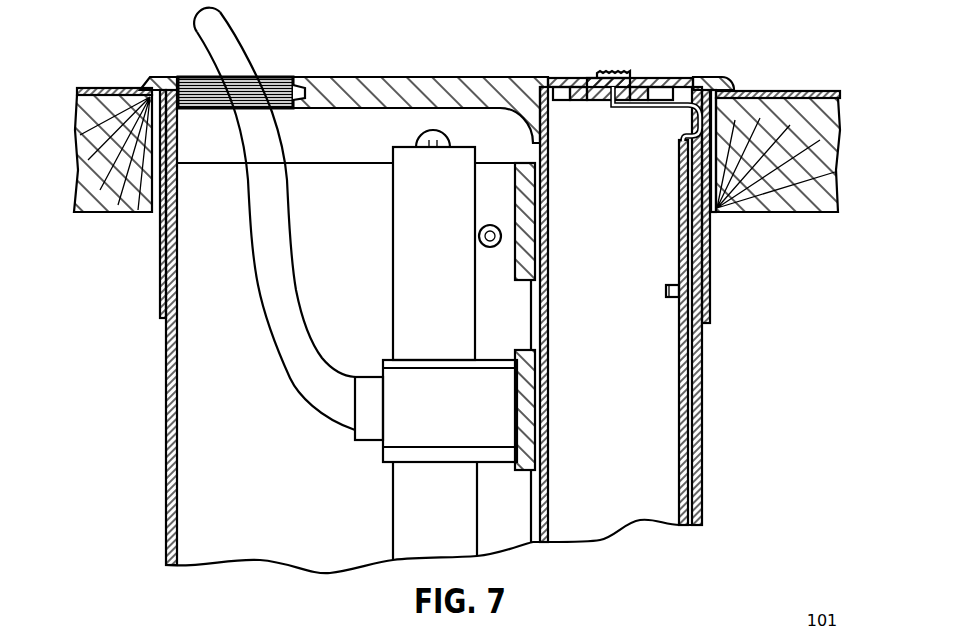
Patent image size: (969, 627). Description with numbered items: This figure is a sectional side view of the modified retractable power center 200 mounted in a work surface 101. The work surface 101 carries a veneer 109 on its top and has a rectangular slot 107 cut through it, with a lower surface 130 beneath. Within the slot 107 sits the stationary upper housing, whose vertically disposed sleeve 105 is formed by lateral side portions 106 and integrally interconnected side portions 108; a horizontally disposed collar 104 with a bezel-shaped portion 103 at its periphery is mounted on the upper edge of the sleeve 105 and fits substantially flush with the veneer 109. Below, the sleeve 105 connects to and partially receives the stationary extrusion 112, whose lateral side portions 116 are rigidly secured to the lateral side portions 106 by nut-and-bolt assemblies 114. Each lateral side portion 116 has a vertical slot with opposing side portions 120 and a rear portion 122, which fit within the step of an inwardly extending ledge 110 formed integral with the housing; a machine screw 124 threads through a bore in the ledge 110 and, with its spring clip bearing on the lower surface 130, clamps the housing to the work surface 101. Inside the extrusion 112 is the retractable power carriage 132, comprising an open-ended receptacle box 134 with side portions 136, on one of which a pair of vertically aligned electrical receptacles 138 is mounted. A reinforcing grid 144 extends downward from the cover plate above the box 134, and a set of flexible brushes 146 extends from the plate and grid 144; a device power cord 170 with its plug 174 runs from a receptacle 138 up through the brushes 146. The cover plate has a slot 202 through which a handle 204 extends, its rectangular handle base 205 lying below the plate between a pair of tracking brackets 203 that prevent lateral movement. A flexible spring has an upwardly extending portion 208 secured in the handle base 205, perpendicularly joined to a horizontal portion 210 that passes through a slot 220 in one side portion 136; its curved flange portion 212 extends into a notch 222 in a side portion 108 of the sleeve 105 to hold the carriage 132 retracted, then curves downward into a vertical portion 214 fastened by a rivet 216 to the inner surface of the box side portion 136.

The work surface 101 is at (97, 216).
The bezel-shaped portion 103 is at (148, 76).
The collar 104 is at (694, 78).
The sleeve 105 is at (157, 306).
The lateral side portion 106 is at (299, 141).
The slot 107 is at (158, 214).
The side portion 108 is at (711, 298).
The veneer 109 is at (113, 87).
The ledge 110 is at (478, 152).
The extrusion 112 is at (162, 414).
The nut-and-bolt assembly 114 is at (491, 222).
The lateral side portion 116 is at (236, 480).
The side portion 120 is at (392, 218).
The rear portion 122 is at (421, 513).
The machine screw 124 is at (435, 140).
The lower surface 130 is at (113, 218).
The power carriage 132 is at (650, 526).
The receptacle box 134 is at (664, 469).
The side portion 136 is at (677, 373).
The electrical receptacle 138 is at (516, 283).
The reinforcing grid 144 is at (381, 109).
The brushes 146 is at (284, 77).
The power cord 170 is at (289, 368).
The plug 174 is at (383, 462).
The power center 200 is at (724, 50).
The slot 202 is at (586, 78).
The tracking bracket 203 is at (558, 87).
The handle 204 is at (612, 74).
The handle base 205 is at (578, 101).
The upwardly extending portion 208 is at (612, 109).
The horizontal portion 210 is at (626, 109).
The curved flange portion 212 is at (690, 119).
The vertical portion 214 is at (677, 214).
The rivet 216 is at (665, 298).
The slot 220 is at (683, 136).
The notch 222 is at (706, 125).